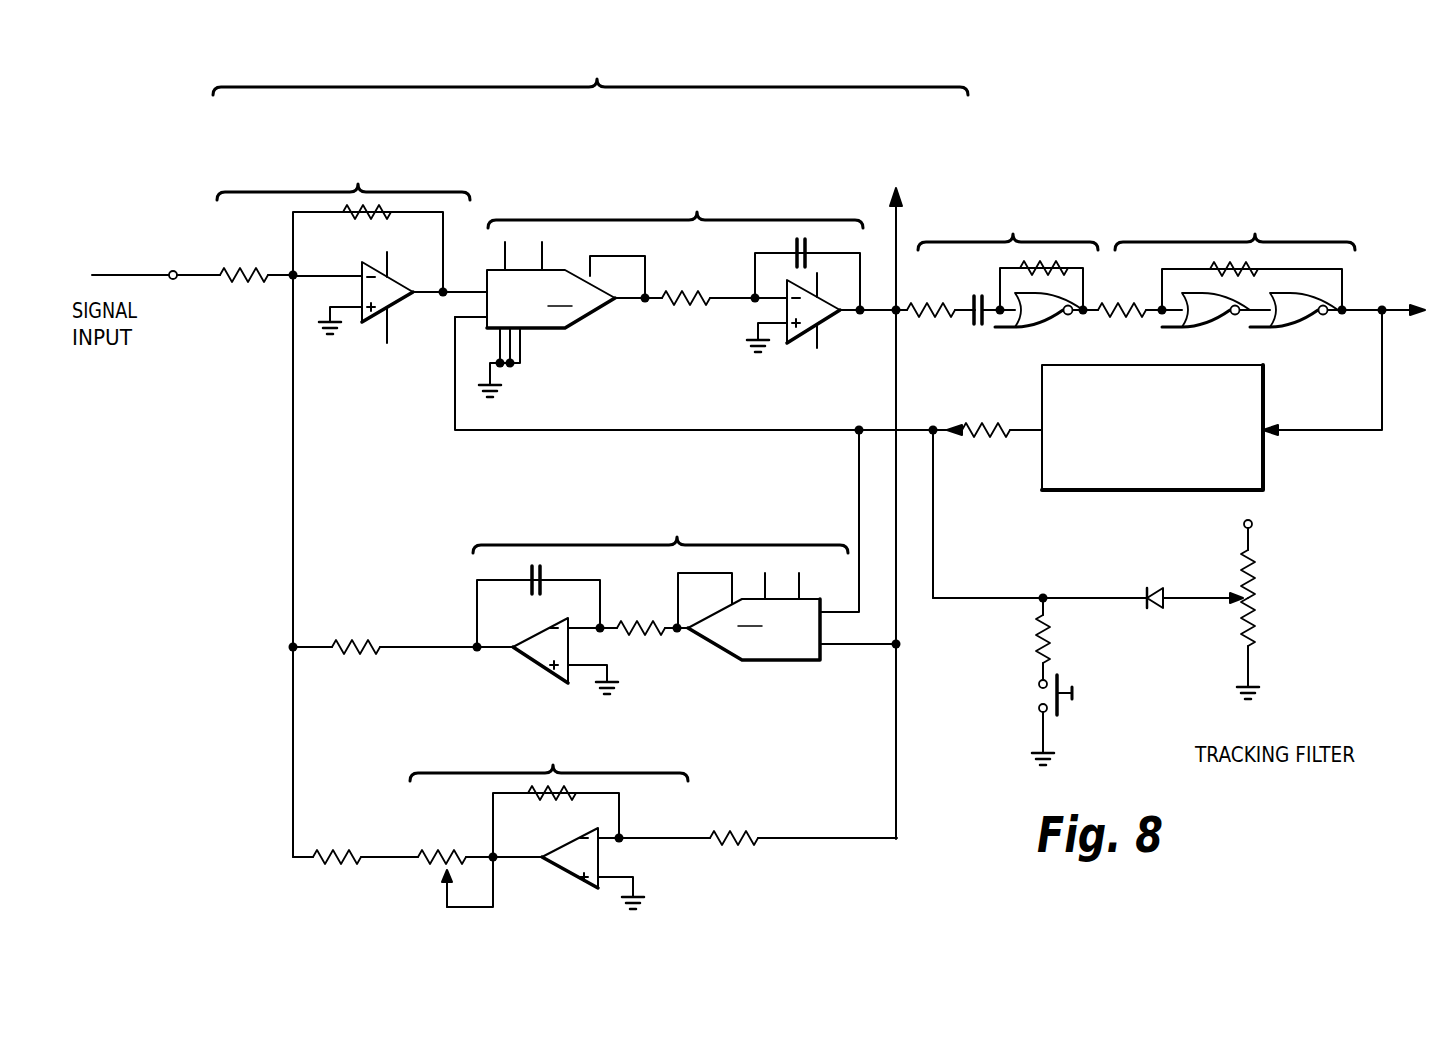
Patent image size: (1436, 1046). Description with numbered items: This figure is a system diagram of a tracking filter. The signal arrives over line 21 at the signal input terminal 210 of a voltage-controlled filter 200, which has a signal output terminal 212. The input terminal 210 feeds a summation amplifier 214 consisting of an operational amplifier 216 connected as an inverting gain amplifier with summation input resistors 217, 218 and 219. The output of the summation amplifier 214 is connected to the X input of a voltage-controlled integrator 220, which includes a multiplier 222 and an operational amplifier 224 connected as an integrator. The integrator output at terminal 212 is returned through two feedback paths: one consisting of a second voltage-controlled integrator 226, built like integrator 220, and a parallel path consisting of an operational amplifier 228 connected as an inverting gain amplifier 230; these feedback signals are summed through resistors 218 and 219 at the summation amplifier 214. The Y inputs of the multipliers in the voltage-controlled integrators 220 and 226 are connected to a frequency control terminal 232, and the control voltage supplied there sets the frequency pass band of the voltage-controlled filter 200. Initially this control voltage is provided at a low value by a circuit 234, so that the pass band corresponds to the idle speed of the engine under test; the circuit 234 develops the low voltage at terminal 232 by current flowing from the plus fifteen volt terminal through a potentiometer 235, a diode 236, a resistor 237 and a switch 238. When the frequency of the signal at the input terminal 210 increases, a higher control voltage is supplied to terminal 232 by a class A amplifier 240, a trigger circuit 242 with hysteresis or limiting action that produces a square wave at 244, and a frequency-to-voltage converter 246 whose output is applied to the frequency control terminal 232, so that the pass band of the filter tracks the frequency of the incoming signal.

The line 21 is at (103, 272).
The signal input terminal 210 is at (173, 271).
The summation input resistor 217 is at (252, 283).
The operational amplifier 216 is at (362, 265).
The summation amplifier 214 is at (352, 230).
The voltage-controlled filter 200 is at (627, 497).
The voltage-controlled integrator 220 is at (675, 249).
The multiplier 222 is at (538, 330).
The operational amplifier 224 is at (832, 318).
The signal output terminal 212 is at (899, 222).
The class A amplifier 240 is at (997, 252).
The trigger circuit 242 is at (1240, 252).
The square wave output 244 is at (1383, 306).
The frequency-to-voltage converter 246 is at (1263, 380).
The frequency control terminal 232 is at (934, 427).
The voltage-controlled integrator 226 is at (593, 568).
The summation input resistor 218 is at (351, 640).
The inverting gain amplifier 230 is at (595, 841).
The summation input resistor 219 is at (335, 854).
The operational amplifier 228 is at (568, 878).
The circuit 234 is at (1065, 681).
The potentiometer 235 is at (1258, 563).
The diode 236 is at (1152, 588).
The resistor 237 is at (1035, 641).
The switch 238 is at (1059, 716).